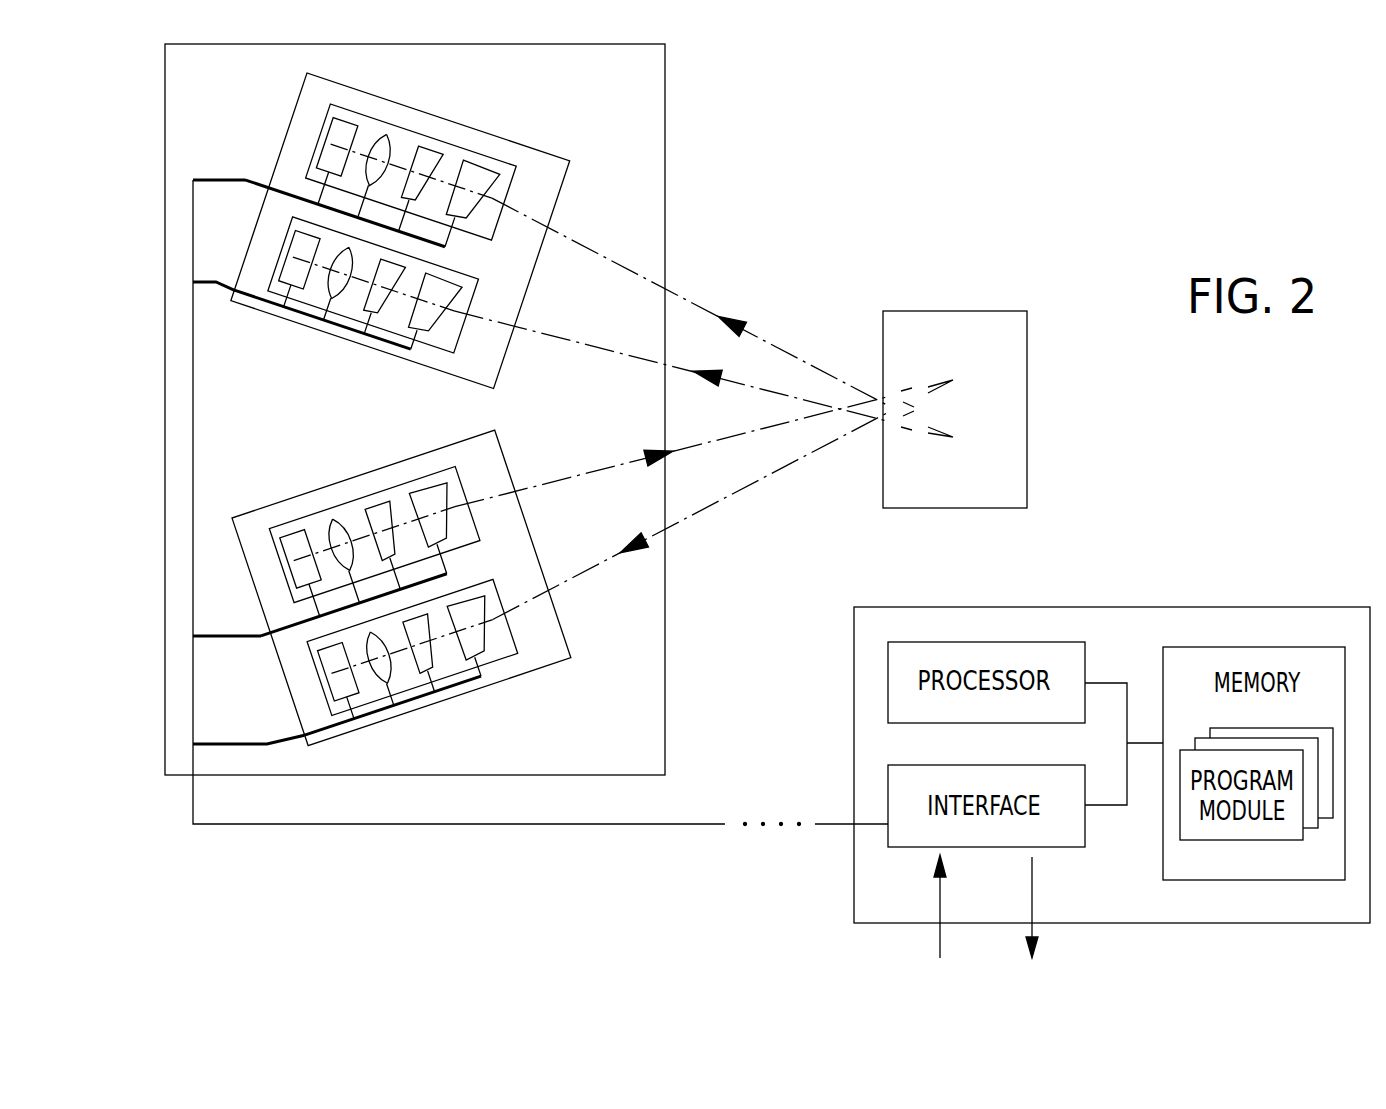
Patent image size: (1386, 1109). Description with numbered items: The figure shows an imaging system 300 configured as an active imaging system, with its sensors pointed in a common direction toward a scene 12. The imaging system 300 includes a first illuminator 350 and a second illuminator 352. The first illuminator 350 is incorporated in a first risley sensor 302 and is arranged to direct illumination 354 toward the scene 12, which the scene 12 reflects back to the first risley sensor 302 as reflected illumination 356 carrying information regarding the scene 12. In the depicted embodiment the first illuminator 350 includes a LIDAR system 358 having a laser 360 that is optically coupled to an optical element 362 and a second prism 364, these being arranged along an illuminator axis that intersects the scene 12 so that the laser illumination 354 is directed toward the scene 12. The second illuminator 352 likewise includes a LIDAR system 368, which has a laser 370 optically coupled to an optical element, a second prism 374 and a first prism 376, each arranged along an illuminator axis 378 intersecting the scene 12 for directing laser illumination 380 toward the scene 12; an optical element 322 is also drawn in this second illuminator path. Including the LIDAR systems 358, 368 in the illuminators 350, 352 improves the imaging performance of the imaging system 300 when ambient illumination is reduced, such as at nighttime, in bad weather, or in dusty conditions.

The scene 12 is at (980, 310).
The imaging system 300 is at (165, 921).
The first risley sensor 302 is at (445, 118).
The receiver lens 322 is at (327, 530).
The first illuminator 350 is at (500, 158).
The second illuminator 352 is at (297, 530).
The illumination 354 is at (745, 313).
The reflected illumination 356 is at (722, 378).
The LIDAR system 358 is at (288, 155).
The laser 360 is at (328, 117).
The optical element 362 is at (390, 140).
The second prism 364 is at (437, 157).
The LIDAR system 368 is at (245, 578).
The laser 370 is at (297, 540).
The second prism 374 is at (377, 503).
The first prism 376 is at (452, 490).
The illuminator axis 378 is at (710, 440).
The laser illumination 380 is at (655, 452).